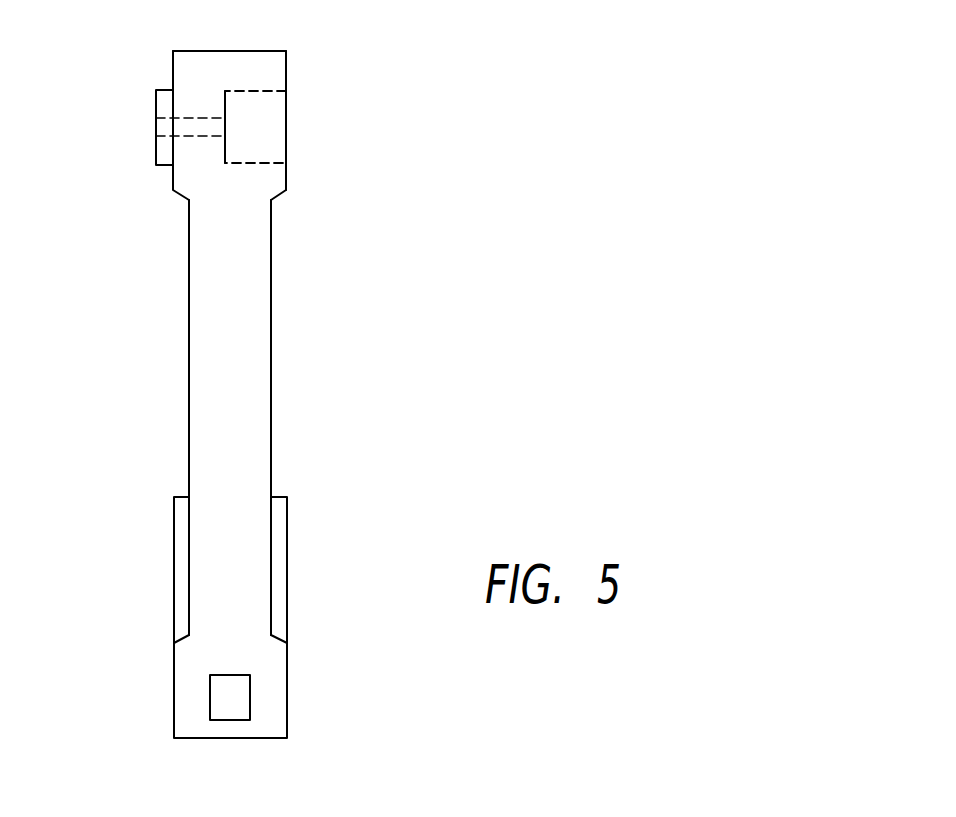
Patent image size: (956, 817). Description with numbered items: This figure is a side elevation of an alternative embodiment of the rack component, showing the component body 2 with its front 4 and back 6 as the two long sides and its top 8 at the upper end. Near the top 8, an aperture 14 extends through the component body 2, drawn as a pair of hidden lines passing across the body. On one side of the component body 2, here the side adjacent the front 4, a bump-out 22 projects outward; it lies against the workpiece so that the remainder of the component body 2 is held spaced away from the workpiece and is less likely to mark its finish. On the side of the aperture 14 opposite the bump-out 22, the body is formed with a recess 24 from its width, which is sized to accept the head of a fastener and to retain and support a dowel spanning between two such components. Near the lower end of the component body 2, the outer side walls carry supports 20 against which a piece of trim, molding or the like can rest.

The component body 2 is at (410, 193).
The front 4 is at (271, 316).
The back 6 is at (189, 324).
The top 8 is at (286, 64).
The aperture 14 is at (156, 126).
The supports 20 is at (238, 700).
The bump-out 22 is at (156, 100).
The recess 24 is at (249, 163).